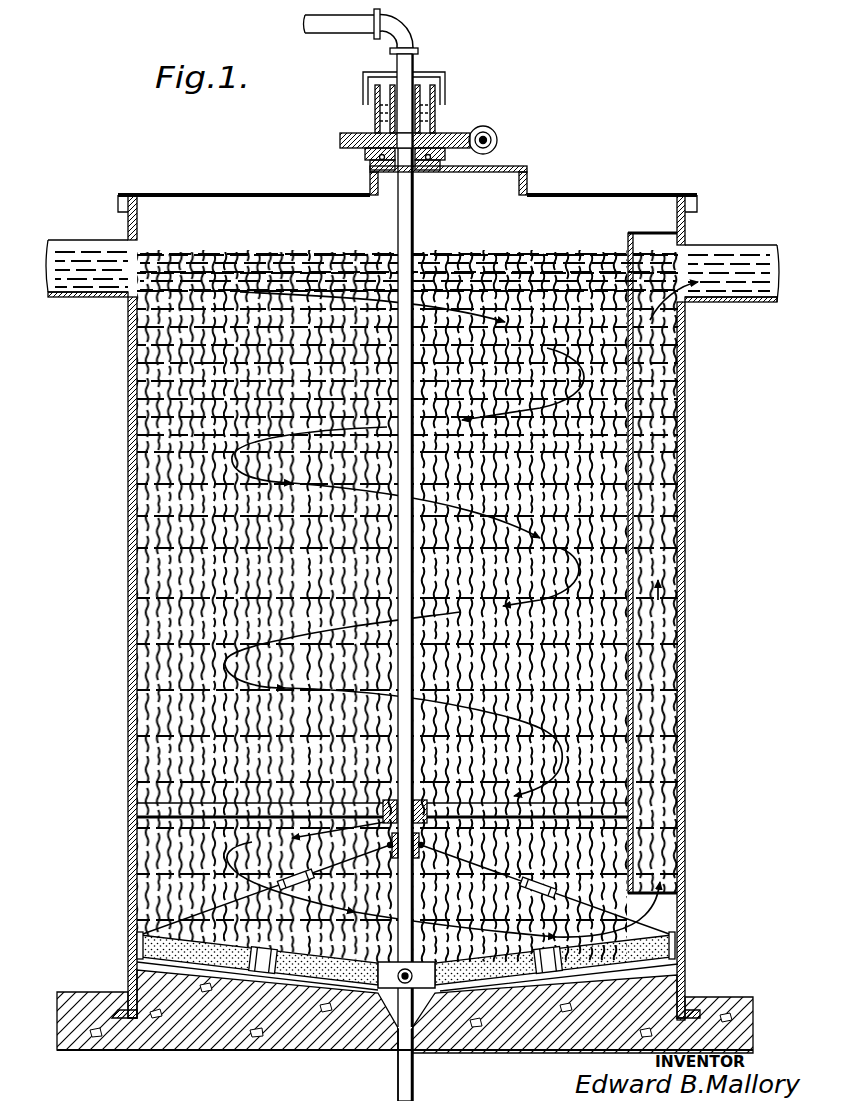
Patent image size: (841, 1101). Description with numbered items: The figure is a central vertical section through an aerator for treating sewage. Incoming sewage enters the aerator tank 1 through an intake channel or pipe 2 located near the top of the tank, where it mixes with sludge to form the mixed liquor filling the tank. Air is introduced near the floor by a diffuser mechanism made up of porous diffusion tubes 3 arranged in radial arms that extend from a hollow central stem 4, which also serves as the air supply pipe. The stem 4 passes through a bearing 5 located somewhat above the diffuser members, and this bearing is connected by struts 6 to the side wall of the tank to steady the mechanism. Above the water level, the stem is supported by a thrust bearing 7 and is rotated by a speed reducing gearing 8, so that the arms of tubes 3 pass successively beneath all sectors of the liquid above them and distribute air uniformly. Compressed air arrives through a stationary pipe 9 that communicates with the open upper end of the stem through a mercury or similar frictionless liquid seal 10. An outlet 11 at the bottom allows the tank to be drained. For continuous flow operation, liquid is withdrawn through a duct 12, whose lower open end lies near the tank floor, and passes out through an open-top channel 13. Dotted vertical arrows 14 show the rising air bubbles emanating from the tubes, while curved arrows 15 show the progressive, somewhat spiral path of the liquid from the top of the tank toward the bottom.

The aerator tank 1 is at (128, 412).
The intake channel or pipe 2 is at (74, 246).
The porous diffusion tubes 3 is at (218, 952).
The central stem 4 is at (405, 563).
The bearing 5 is at (426, 801).
The struts 6 is at (255, 803).
The thrust bearing 7 is at (370, 160).
The speed reducing gearing 8 is at (483, 127).
The stationary pipe 9 is at (410, 58).
The liquid seal 10 is at (432, 118).
The outlet 11 is at (416, 1045).
The duct 12 is at (655, 668).
The channel 13 is at (745, 258).
The dotted vertical arrows 14 is at (580, 494).
The curved arrows 15 is at (470, 520).